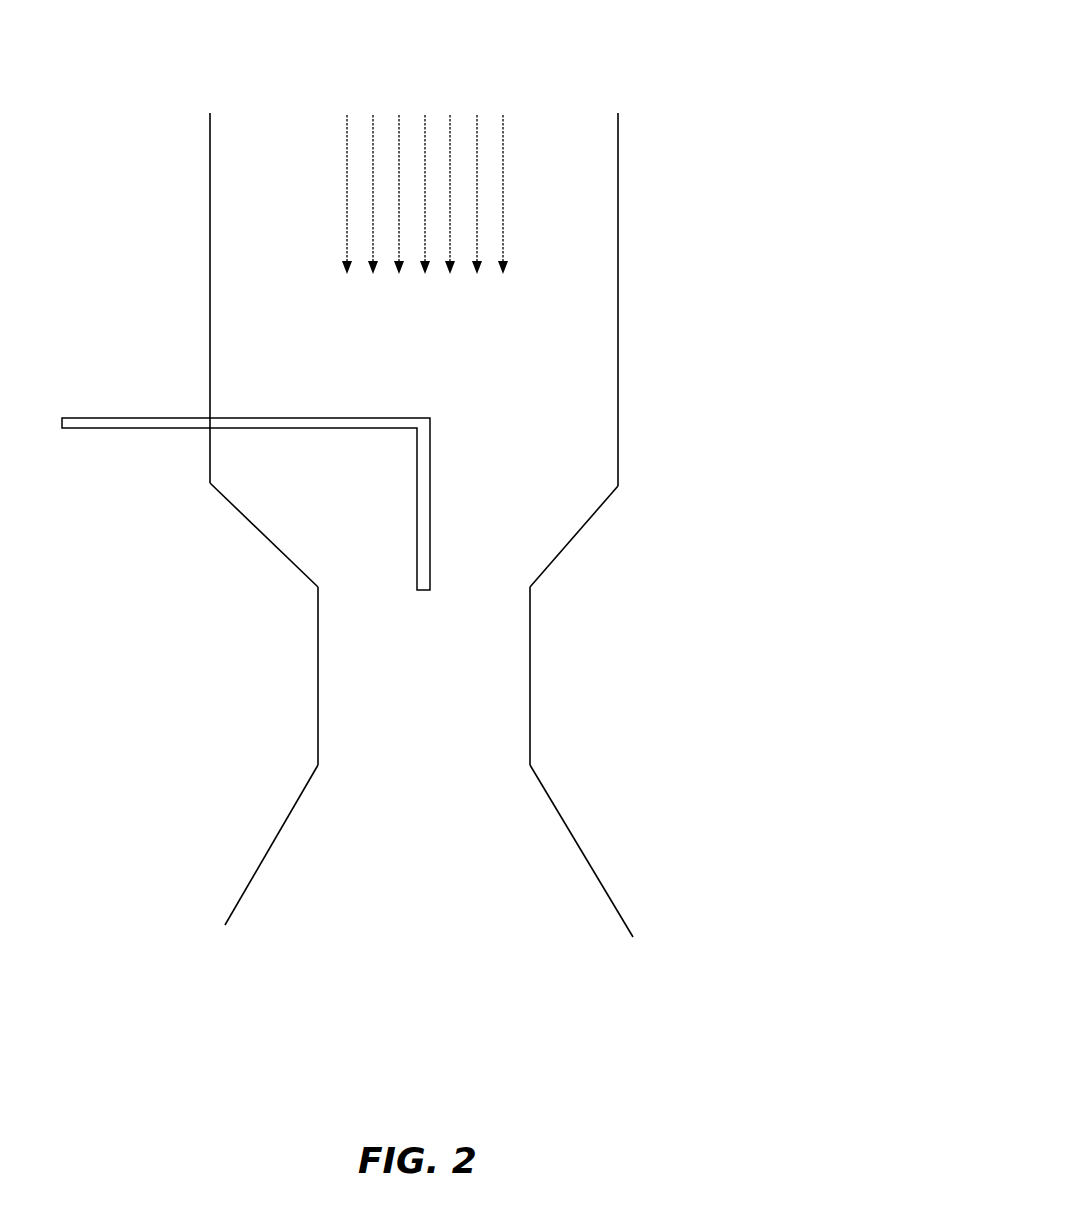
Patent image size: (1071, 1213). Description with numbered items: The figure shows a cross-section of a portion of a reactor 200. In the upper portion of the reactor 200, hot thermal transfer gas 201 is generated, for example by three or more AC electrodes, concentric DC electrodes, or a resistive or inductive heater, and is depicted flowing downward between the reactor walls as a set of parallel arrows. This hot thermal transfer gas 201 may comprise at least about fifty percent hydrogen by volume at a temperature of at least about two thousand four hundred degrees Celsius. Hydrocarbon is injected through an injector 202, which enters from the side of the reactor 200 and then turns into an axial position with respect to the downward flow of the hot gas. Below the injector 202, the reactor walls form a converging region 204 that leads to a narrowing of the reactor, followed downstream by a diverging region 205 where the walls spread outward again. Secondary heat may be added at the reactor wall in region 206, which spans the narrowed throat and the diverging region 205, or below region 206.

The reactor 200 is at (731, 43).
The hot thermal transfer gas 201 is at (504, 196).
The injector 202 is at (129, 414).
The converging region 204 is at (265, 547).
The diverging region 205 is at (261, 845).
The region 206 is at (695, 586).